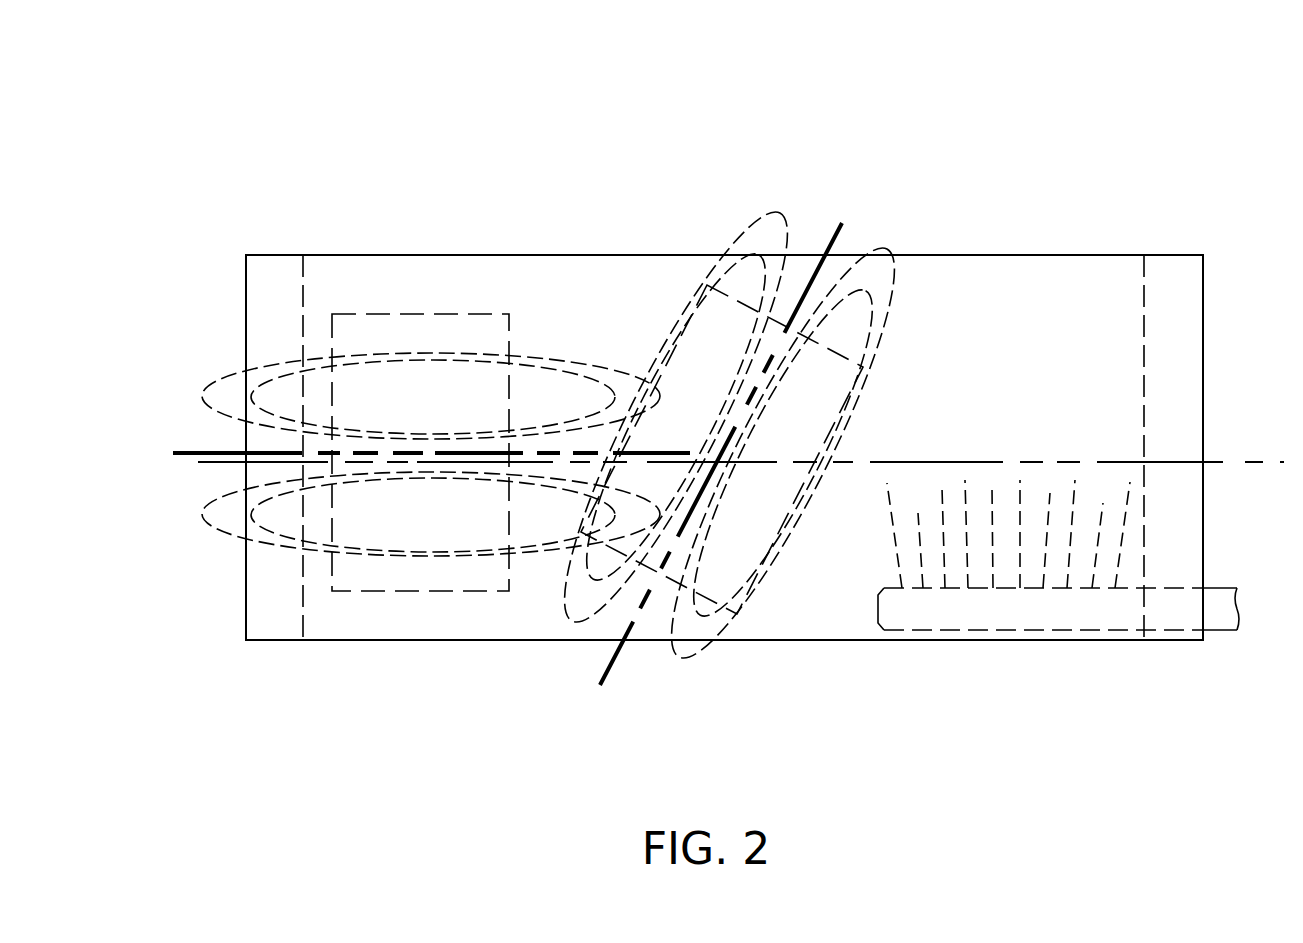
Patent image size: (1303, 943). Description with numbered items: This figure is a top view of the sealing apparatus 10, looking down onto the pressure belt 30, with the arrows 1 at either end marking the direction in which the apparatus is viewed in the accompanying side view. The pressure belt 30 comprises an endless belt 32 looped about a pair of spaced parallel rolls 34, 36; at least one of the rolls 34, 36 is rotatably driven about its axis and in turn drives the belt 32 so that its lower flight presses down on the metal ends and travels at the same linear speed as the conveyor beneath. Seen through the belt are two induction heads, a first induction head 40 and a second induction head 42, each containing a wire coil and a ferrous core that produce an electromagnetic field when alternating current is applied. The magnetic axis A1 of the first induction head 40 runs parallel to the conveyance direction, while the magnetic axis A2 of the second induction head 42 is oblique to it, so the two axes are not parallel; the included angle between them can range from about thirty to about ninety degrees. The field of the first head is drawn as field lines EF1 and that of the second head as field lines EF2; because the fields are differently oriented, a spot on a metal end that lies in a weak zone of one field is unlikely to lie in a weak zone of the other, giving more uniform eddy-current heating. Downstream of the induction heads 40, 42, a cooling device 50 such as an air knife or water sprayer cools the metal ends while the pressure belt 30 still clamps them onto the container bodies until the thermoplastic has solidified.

The apparatus 10 is at (1172, 132).
The pressure belt 30 is at (1064, 252).
The endless belt 32 is at (805, 626).
The roll 34 is at (308, 628).
The roll 36 is at (1142, 349).
The first induction head 40 is at (417, 325).
The second induction head 42 is at (822, 387).
The cooling device 50 is at (1030, 629).
The field lines EF1 is at (442, 557).
The field lines EF2 is at (893, 302).
The magnetic axis A1 is at (675, 450).
The magnetic axis A2 is at (836, 232).
The section line 1- 1 is at (221, 498).